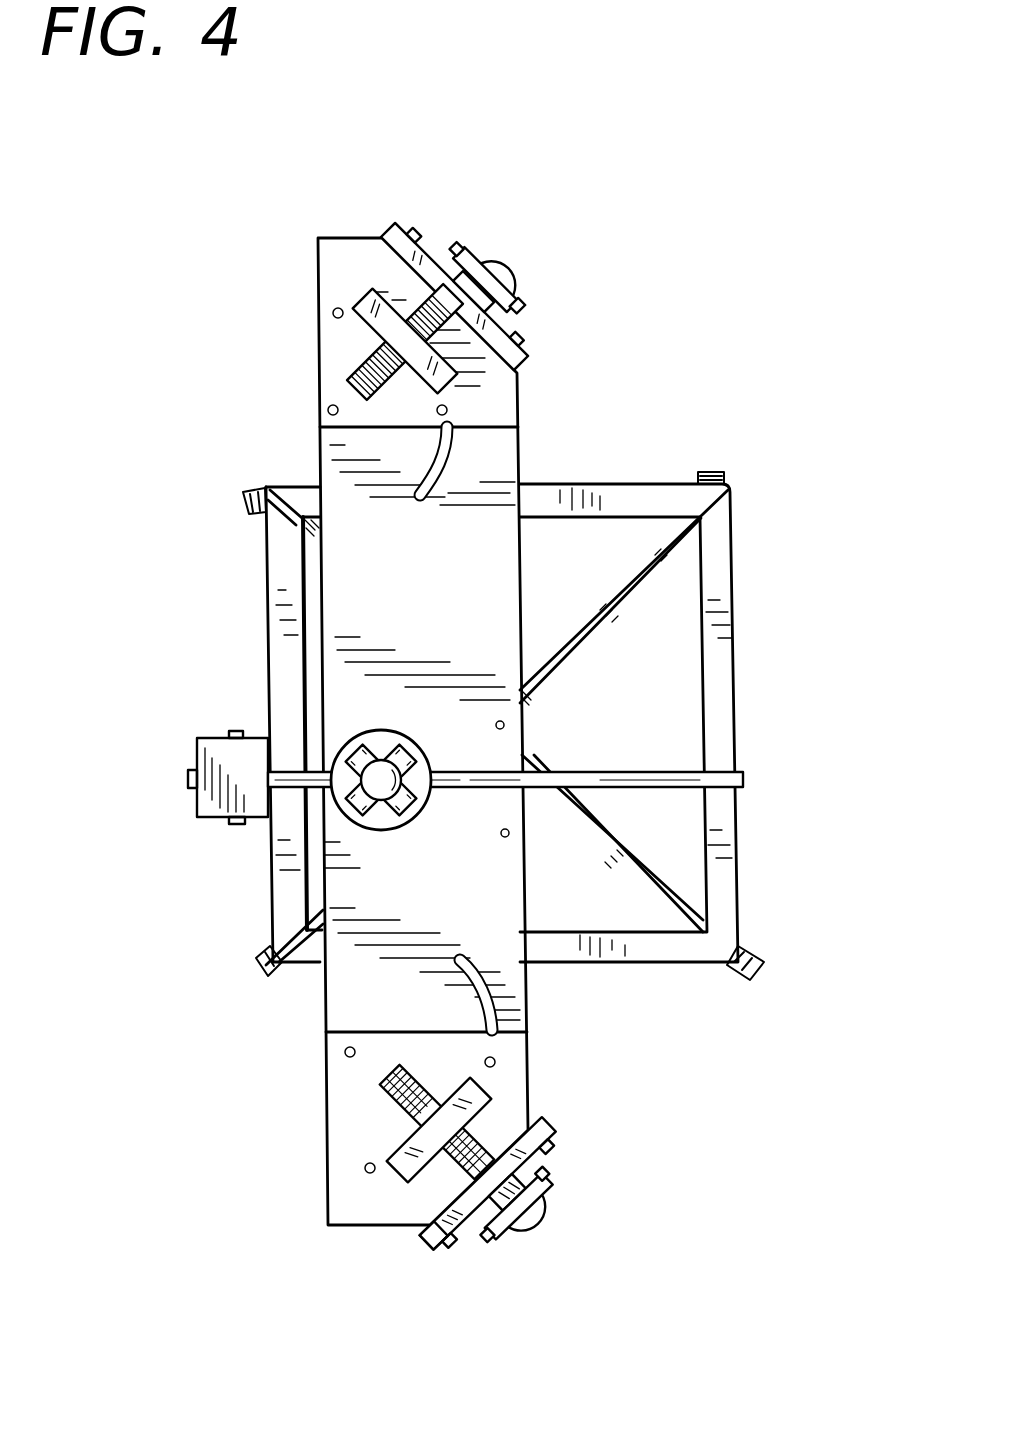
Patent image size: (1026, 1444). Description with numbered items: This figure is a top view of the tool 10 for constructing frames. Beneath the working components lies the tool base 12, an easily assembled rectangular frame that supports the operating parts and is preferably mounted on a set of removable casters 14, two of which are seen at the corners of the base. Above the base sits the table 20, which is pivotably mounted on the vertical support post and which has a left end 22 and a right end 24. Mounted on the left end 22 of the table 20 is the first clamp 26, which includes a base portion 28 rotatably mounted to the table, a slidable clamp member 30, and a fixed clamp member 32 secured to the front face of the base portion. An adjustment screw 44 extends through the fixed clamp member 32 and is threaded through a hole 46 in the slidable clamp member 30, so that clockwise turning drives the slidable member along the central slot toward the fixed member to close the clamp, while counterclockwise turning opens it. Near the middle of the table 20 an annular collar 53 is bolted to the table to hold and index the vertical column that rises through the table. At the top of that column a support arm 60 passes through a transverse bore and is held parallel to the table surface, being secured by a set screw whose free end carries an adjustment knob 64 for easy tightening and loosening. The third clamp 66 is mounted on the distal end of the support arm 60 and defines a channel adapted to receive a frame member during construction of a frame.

The tool 10 is at (788, 603).
The tool base 12 is at (712, 720).
The removable casters 14 is at (713, 475).
The table 20 is at (353, 998).
The left end 22 is at (513, 1000).
The right end 24 is at (505, 450).
The first clamp 26 is at (312, 1197).
The base portion 28 is at (500, 1120).
The slidable clamp member 30 is at (412, 1150).
The fixed clamp member 32 is at (430, 1247).
The adjustment screw 44 is at (390, 1078).
The hole 46 is at (508, 1230).
The annular collar 53 is at (395, 828).
The support arm 60 is at (640, 772).
The adjustment knob 64 is at (405, 745).
The third clamp 66 is at (208, 765).